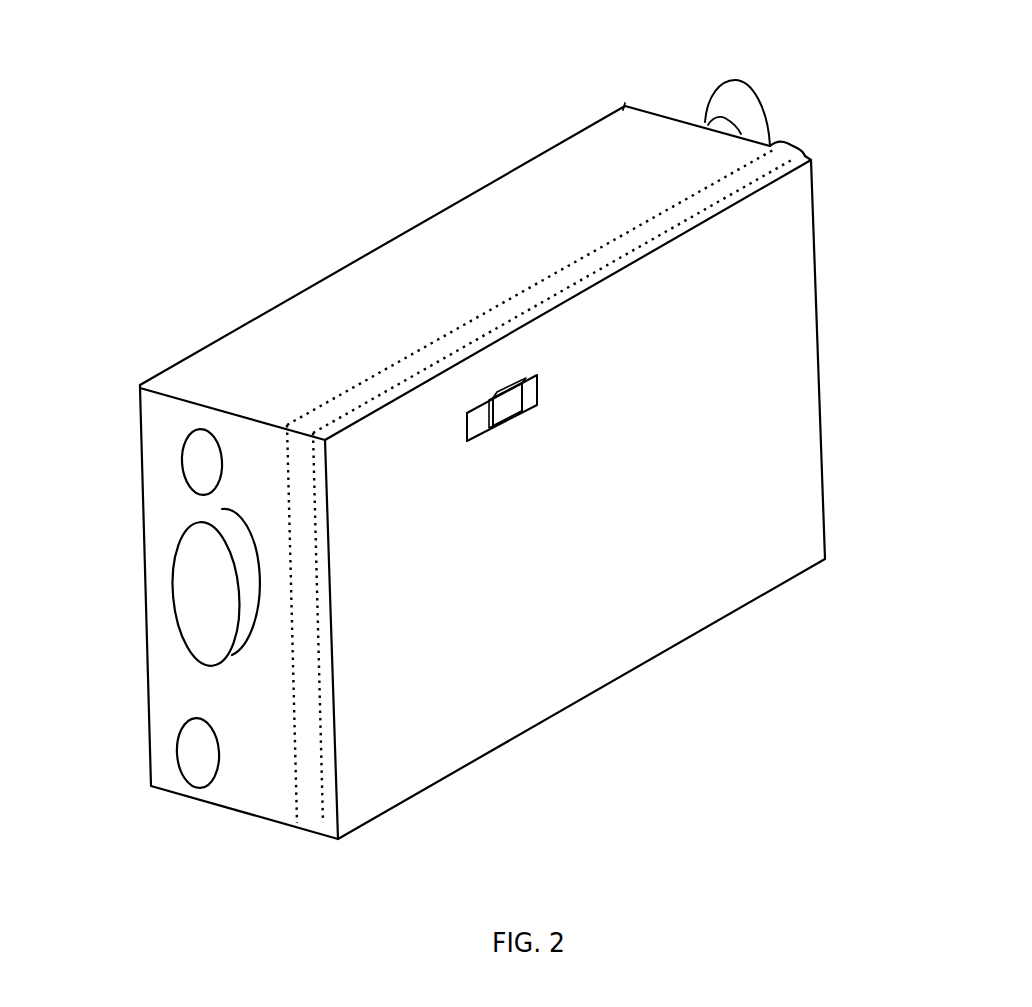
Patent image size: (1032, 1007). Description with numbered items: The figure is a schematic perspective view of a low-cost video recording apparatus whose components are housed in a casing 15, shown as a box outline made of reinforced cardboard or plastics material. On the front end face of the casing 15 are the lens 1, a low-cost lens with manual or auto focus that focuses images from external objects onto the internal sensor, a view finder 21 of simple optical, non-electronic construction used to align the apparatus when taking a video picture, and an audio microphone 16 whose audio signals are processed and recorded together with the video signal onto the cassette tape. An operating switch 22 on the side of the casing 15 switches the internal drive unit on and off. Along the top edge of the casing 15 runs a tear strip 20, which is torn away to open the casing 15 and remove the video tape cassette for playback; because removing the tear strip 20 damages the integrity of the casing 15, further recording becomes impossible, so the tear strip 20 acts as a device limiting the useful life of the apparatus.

The casing 15 is at (388, 238).
The tear strip 20 is at (802, 152).
The view finder 21 is at (181, 458).
The lens 1 is at (176, 580).
The audio microphone 16 is at (176, 749).
The operating switch 22 is at (505, 422).